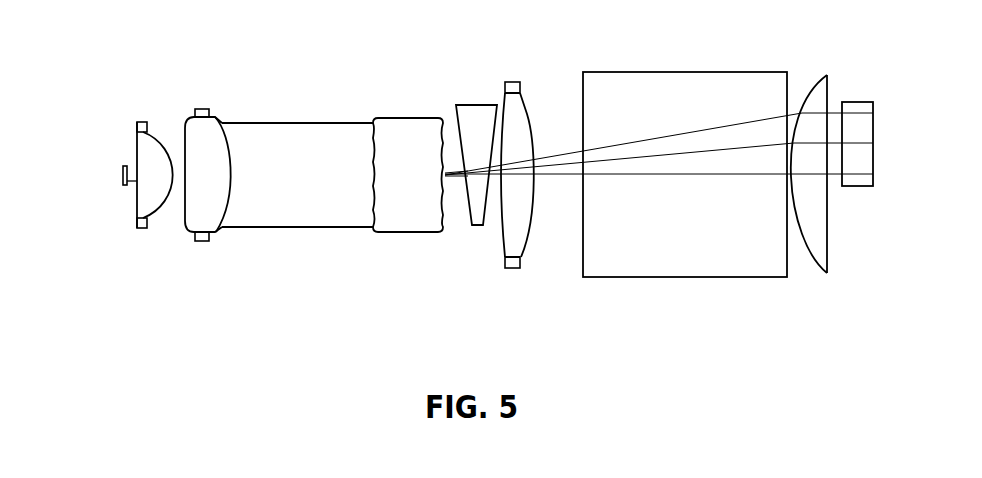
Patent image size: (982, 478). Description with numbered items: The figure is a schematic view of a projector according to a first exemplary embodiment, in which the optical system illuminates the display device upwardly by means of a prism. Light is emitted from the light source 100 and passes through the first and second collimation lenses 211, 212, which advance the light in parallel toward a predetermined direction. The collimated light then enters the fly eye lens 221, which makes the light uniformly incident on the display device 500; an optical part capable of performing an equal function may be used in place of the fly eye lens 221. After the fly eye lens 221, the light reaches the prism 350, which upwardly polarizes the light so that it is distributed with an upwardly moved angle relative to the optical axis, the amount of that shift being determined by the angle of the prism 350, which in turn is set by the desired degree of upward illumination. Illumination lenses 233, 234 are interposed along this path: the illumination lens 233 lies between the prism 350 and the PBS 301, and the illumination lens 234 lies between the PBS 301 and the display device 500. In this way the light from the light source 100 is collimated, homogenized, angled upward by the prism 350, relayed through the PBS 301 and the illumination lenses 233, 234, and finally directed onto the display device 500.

The light source 100 is at (123, 181).
The first collimation lens 211 is at (157, 208).
The second collimation lens 212 is at (218, 214).
The fly eye lens 221 is at (400, 227).
The prism 350 is at (473, 106).
The illumination lens 233 is at (527, 238).
The PBS 301 is at (687, 263).
The illumination lens 234 is at (821, 258).
The display device 500 is at (860, 101).